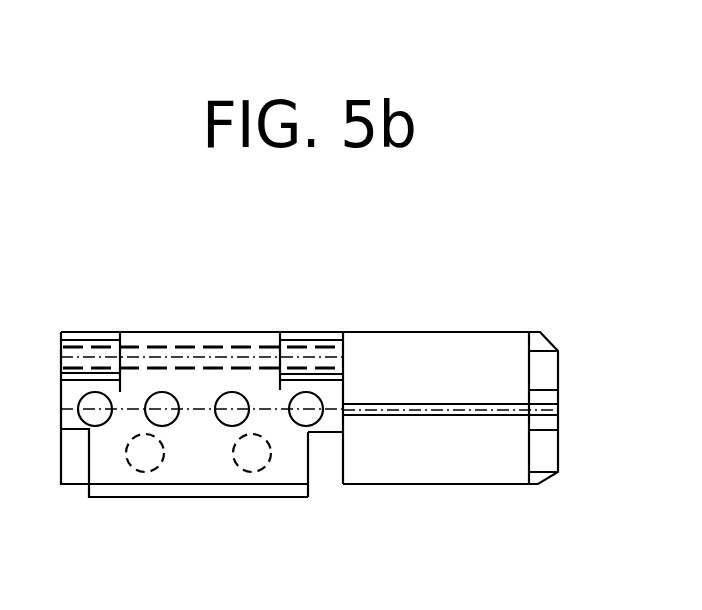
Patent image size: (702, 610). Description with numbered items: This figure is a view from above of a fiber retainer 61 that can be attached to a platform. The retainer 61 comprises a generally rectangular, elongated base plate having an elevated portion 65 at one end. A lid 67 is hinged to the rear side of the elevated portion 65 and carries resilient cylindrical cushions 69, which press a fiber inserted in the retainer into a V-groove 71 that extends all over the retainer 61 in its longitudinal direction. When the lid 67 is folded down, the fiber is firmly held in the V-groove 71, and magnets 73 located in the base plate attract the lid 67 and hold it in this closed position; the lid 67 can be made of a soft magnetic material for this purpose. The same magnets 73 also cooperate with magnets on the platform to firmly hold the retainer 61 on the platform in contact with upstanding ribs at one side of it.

The retainer 61 is at (310, 283).
The elevated portion 65 is at (320, 467).
The lid 67 is at (178, 470).
The resilient cylindrical cushions 69 is at (233, 393).
The V-groove 71 is at (425, 410).
The magnets 73 is at (252, 477).